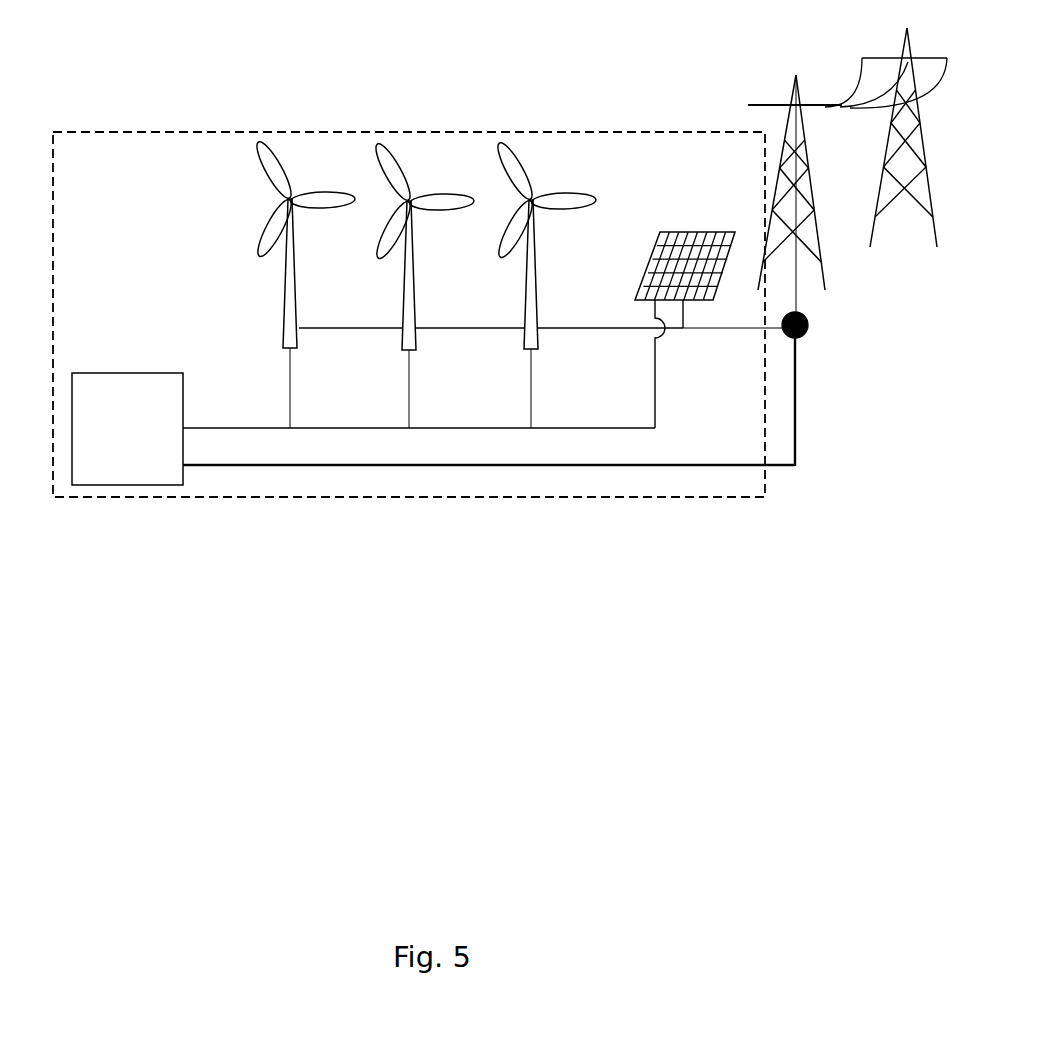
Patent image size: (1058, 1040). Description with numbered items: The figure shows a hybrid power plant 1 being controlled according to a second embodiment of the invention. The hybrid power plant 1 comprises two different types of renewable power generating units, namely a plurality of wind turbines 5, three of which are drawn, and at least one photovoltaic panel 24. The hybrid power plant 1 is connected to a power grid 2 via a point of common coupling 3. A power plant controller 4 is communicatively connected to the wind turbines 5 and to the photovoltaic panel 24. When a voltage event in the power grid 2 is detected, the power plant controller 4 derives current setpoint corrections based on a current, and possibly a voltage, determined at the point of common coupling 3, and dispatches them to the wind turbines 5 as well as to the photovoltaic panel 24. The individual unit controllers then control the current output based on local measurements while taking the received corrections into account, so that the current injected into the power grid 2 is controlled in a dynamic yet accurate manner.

The hybrid power plant 1 is at (300, 77).
The power grid 2 is at (838, 78).
The point of common coupling 3 is at (808, 328).
The power plant controller 4 is at (132, 467).
The wind turbines 5 is at (297, 157).
The photovoltaic panel 24 is at (675, 233).